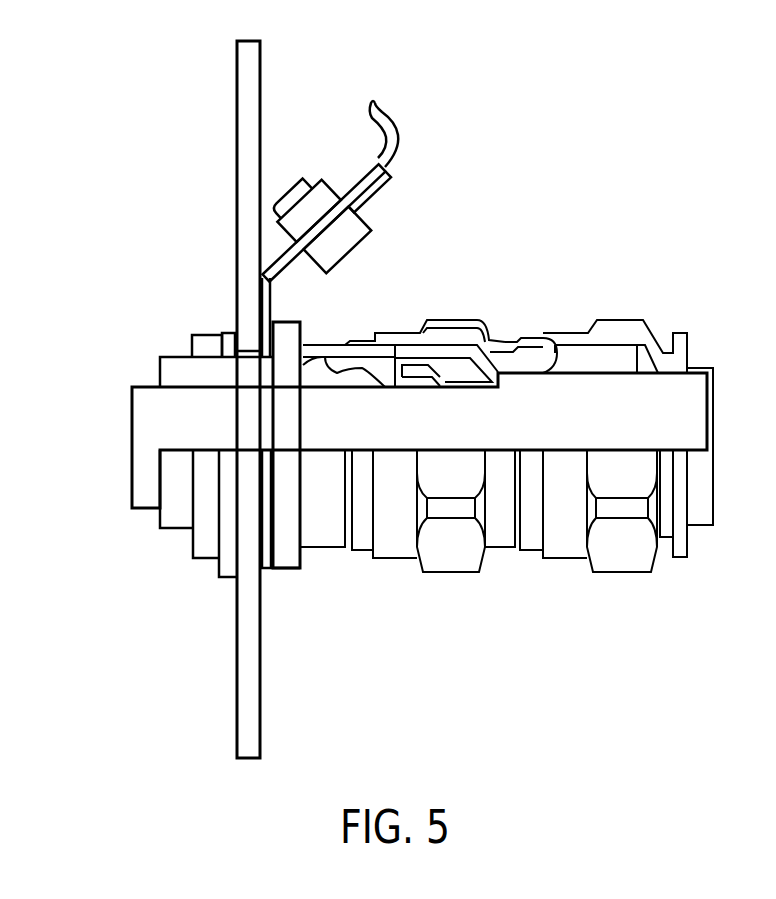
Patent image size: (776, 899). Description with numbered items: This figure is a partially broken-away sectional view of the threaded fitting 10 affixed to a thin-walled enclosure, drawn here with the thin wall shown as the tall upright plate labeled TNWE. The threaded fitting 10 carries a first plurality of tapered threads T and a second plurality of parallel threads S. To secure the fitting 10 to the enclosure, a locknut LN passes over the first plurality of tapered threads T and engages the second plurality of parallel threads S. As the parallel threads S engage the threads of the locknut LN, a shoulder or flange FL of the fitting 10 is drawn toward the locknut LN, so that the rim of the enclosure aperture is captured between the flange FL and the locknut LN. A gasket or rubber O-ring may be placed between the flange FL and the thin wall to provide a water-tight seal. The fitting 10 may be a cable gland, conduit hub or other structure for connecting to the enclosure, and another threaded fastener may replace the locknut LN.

The threaded fitting 10 is at (136, 345).
The first plurality of threads T is at (177, 357).
The locknut LN is at (223, 335).
The second plurality of threads S is at (248, 345).
The terminal nut wall extension bar TNWE is at (243, 673).
The flange FL is at (297, 315).